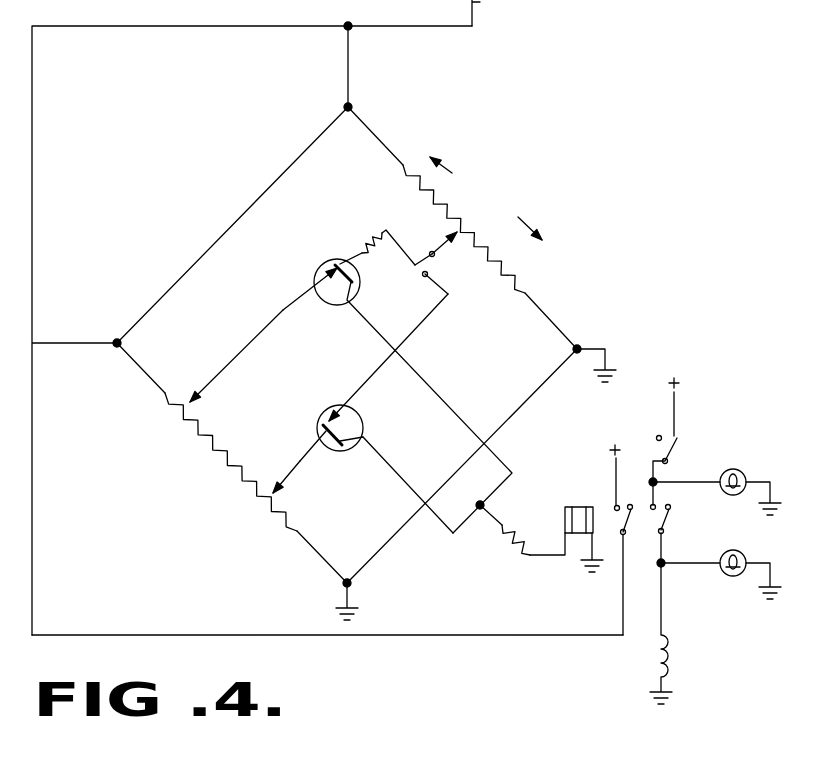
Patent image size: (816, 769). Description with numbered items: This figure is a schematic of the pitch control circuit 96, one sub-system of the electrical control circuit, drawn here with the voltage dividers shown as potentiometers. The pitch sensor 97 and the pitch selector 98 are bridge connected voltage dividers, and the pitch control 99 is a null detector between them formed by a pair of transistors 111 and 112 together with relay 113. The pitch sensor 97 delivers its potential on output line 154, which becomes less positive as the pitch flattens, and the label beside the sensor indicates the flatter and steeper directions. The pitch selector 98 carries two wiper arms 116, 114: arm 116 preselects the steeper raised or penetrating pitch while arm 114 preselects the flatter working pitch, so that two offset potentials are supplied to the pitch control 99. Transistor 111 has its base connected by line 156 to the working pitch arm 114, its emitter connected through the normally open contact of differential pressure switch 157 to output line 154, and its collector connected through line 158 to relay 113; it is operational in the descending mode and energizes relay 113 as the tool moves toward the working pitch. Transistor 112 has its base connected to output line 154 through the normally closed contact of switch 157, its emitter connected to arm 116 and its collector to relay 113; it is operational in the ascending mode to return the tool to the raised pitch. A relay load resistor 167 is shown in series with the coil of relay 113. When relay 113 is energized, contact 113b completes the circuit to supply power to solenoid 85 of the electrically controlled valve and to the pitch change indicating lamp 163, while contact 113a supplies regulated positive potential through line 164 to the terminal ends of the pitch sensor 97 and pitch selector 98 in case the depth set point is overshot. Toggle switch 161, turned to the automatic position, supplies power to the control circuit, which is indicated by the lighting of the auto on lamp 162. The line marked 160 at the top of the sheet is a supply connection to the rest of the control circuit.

The supply line 160 is at (501, 13).
The pitch control circuit 96 is at (528, 180).
The pitch sensor 97 is at (477, 268).
The pitch selector 98 is at (192, 383).
The pitch control 99 is at (290, 272).
The transistor 112 is at (335, 262).
The output line 154 is at (441, 238).
The differential pressure switch 157 is at (415, 268).
The transistor 111 is at (338, 403).
The line 156 is at (315, 448).
The wiper arm 116 is at (217, 380).
The wiper arm 114 is at (298, 473).
The line 158 is at (395, 465).
The relay load resistor 167 is at (507, 547).
The relay 113 is at (572, 507).
The contact 113a is at (615, 506).
The contact 113b is at (667, 522).
The toggle switch 161 is at (678, 445).
The auto on lamp 162 is at (738, 470).
The pitch change indicating lamp 163 is at (735, 578).
The solenoid 85 is at (668, 653).
The line 164 is at (573, 636).